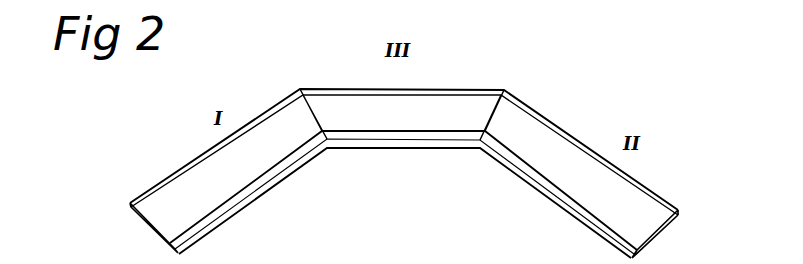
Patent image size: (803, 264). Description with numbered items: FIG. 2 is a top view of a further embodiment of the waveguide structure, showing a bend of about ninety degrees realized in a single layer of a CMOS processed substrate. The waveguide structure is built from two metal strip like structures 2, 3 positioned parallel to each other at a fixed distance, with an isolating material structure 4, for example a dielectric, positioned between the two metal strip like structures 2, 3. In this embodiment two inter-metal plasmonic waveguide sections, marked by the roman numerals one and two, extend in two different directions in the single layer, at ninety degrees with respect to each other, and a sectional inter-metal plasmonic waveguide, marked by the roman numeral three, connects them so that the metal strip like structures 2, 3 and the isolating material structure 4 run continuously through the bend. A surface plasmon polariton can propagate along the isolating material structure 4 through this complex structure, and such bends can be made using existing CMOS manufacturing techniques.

The metal strip like structure 2 is at (171, 183).
The metal strip like structure 3 is at (252, 190).
The isolating material structure 4 is at (176, 214).